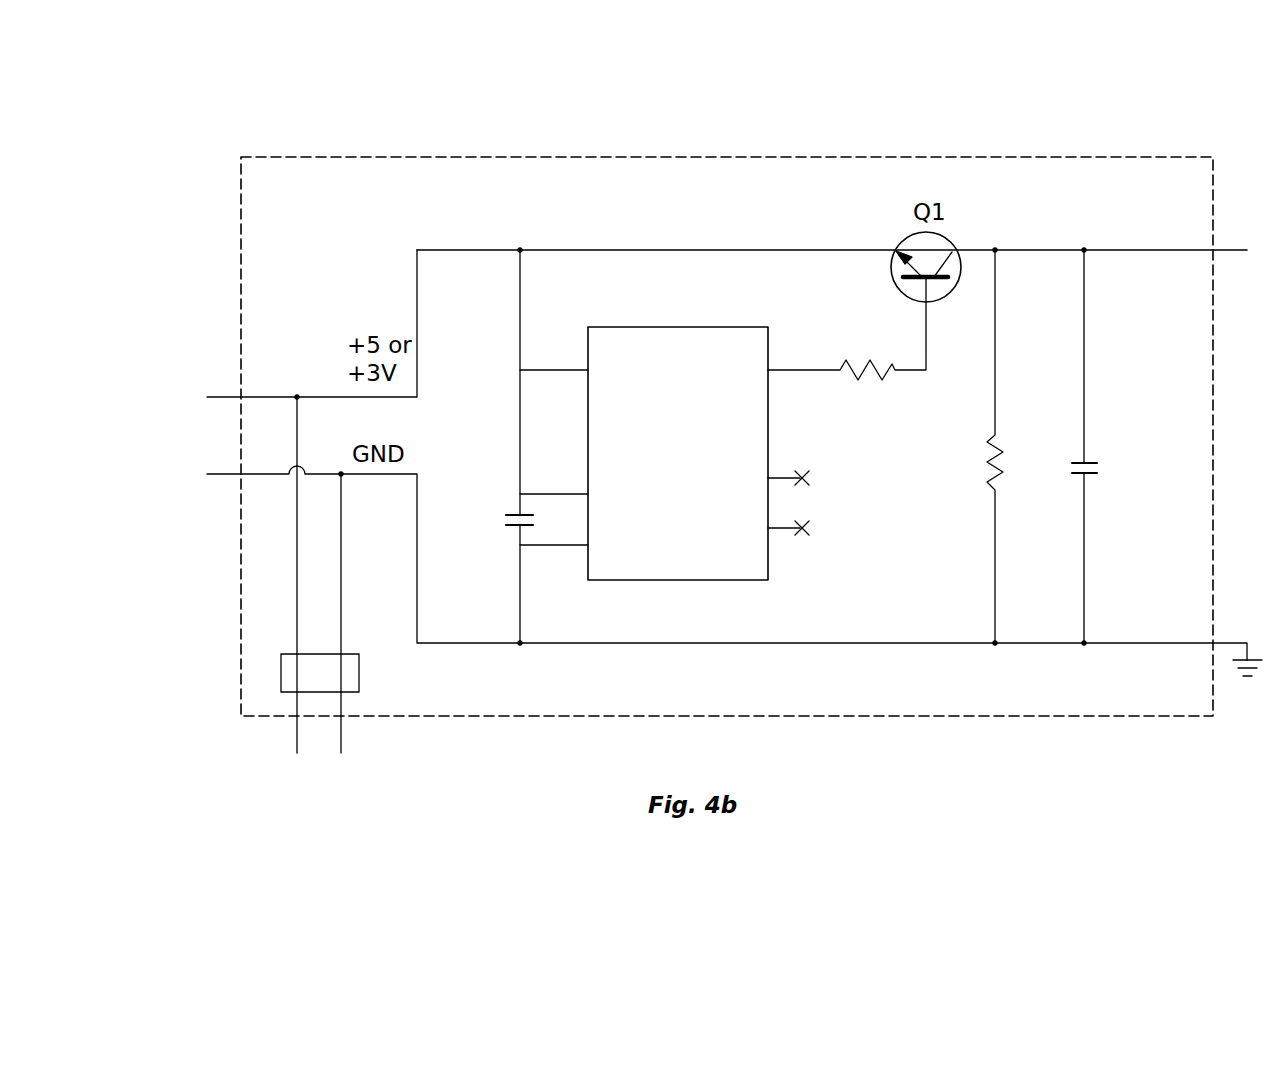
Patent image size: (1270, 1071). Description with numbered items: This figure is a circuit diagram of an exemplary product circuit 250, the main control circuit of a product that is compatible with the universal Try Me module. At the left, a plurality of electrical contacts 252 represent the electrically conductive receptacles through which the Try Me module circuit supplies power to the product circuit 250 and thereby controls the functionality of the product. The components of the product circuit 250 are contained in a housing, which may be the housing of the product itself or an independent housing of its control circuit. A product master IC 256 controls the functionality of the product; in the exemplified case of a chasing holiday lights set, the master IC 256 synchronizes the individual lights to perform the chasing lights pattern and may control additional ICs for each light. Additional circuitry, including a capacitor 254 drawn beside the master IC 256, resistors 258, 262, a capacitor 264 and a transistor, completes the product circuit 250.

The product circuit 250 is at (305, 150).
The electrical contacts 252 is at (281, 675).
The capacitor C1 254 is at (527, 527).
The product master IC 256 is at (727, 327).
The resistor 258 is at (868, 378).
The resistor 262 is at (990, 477).
The capacitor 264 is at (1090, 475).